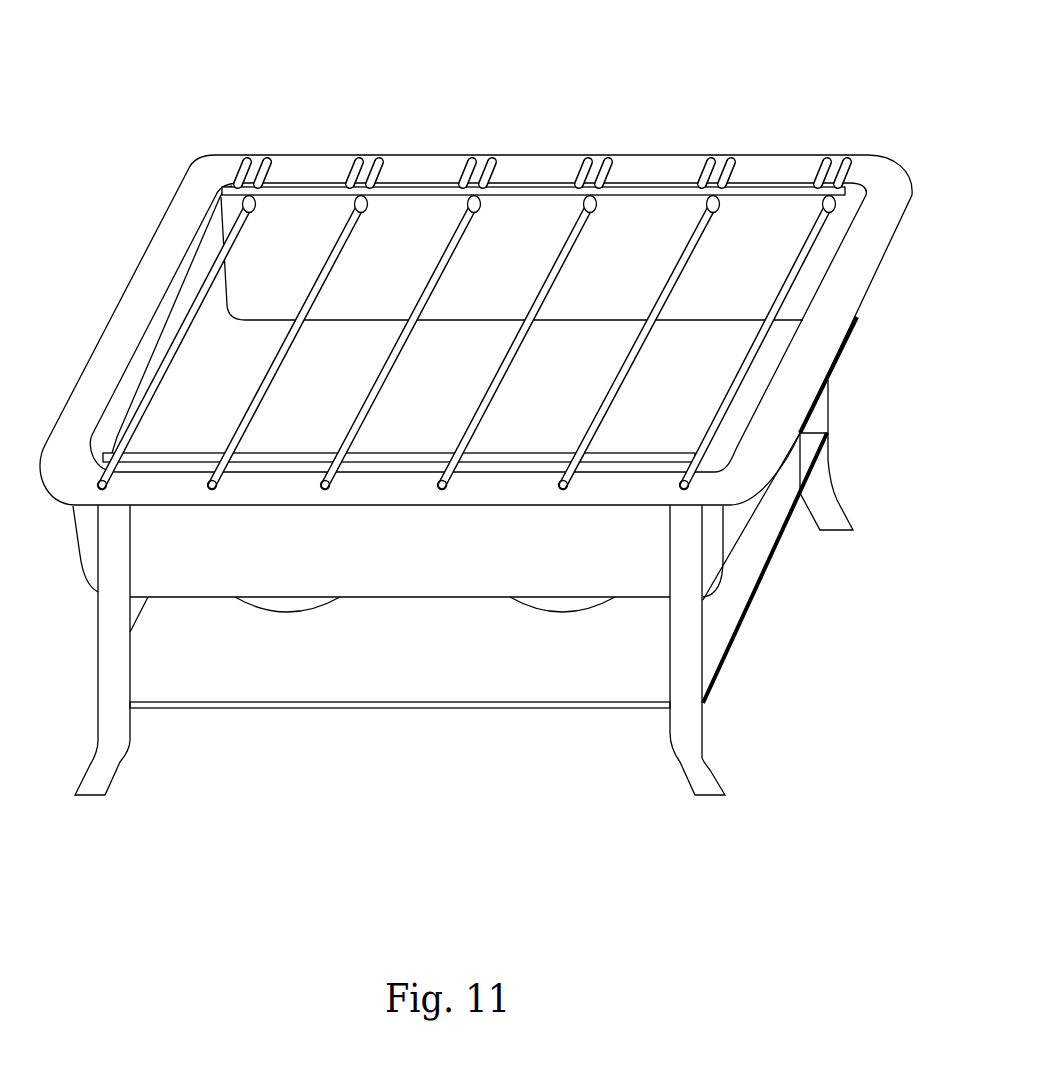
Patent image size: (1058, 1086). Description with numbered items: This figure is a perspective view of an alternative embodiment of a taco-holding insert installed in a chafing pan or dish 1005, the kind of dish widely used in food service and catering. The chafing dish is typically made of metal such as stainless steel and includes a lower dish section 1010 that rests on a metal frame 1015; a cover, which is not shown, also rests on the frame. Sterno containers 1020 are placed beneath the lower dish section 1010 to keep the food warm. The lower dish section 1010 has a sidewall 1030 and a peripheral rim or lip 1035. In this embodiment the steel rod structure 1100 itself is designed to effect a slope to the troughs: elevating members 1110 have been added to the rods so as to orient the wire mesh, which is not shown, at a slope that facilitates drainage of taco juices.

The chafing pan or dish 1005 is at (493, 437).
The lower dish section 1010 is at (857, 318).
The metal frame 1015 is at (688, 655).
The Sterno containers 1020 is at (278, 613).
The sidewall 1030 is at (433, 560).
The peripheral rim or lip 1035 is at (127, 323).
The steel rod structure 1100 is at (353, 172).
The elevating members 1110 is at (722, 165).